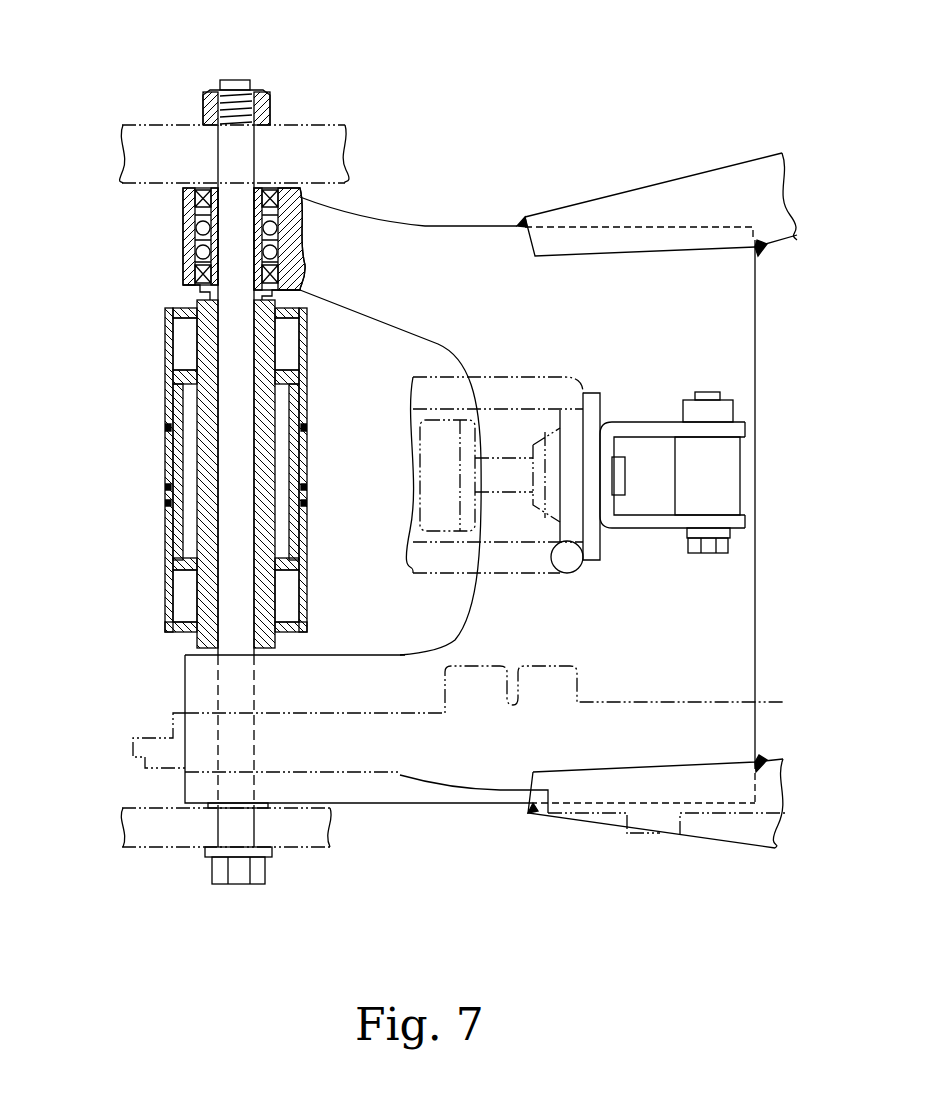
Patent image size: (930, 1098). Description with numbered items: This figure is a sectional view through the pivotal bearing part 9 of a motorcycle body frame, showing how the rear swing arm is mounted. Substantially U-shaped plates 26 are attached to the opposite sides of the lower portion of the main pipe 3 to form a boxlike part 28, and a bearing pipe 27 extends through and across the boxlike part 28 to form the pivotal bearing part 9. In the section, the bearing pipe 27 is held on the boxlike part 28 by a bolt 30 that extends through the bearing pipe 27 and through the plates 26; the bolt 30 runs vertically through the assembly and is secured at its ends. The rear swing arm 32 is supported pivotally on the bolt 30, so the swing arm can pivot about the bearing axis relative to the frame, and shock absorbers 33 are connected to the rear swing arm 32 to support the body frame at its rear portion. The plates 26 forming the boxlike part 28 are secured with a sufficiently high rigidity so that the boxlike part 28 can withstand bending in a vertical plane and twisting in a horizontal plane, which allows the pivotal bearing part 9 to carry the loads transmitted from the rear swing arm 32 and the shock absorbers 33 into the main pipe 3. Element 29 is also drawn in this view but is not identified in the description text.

The main pipe 3 is at (165, 462).
The pivotal bearing part 9 is at (275, 73).
The U-shaped plates 26 is at (165, 330).
The bearing pipe 27 is at (170, 630).
The boxlike part 28 is at (160, 520).
The frame cross members 29 is at (318, 124).
The bolt 30 is at (232, 80).
The rear swing arm 32 is at (448, 225).
The shock absorbers 33 is at (515, 378).